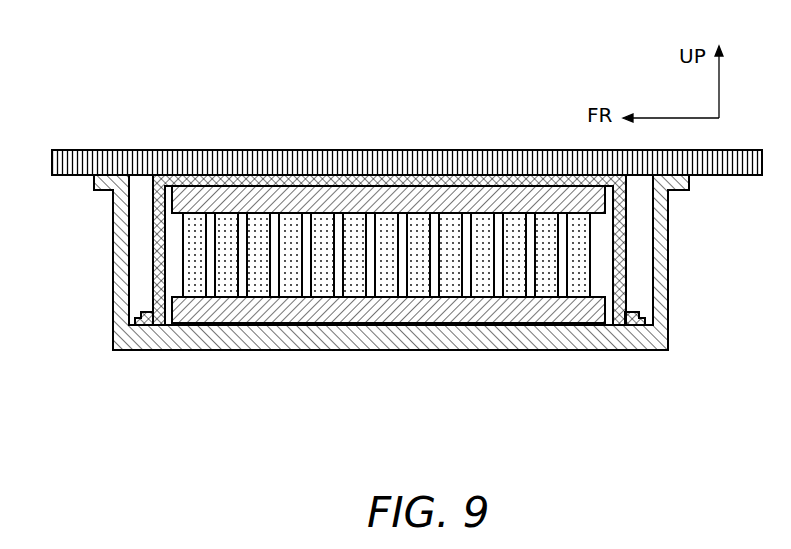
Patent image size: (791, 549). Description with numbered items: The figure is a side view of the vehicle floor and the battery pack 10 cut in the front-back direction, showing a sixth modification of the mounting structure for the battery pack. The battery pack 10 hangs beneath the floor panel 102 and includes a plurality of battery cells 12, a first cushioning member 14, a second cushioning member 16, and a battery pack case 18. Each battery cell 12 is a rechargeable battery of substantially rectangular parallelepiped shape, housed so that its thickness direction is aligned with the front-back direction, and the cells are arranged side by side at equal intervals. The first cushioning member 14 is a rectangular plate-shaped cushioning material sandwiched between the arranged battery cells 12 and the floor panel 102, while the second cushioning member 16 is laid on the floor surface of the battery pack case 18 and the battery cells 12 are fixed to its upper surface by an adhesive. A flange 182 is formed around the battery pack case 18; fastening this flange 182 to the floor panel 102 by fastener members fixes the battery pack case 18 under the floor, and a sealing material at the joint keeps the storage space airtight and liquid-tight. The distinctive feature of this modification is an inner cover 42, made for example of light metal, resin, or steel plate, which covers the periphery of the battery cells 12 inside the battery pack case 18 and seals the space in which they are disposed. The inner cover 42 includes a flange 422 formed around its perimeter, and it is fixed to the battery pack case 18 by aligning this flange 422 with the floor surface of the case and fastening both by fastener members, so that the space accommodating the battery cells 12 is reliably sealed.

The battery pack 10 is at (388, 253).
The battery cell 12 is at (195, 237).
The first cushioning member 14 is at (513, 197).
The second cushioning member 16 is at (292, 313).
The battery pack case 18 is at (385, 340).
The inner cover 42 is at (273, 180).
The floor panel 102 is at (398, 160).
The flange 182 is at (102, 192).
The flange 422 is at (140, 323).